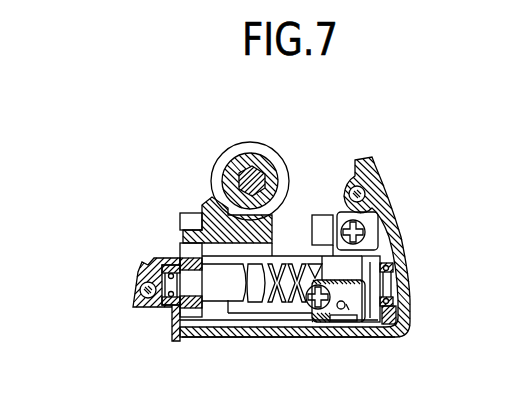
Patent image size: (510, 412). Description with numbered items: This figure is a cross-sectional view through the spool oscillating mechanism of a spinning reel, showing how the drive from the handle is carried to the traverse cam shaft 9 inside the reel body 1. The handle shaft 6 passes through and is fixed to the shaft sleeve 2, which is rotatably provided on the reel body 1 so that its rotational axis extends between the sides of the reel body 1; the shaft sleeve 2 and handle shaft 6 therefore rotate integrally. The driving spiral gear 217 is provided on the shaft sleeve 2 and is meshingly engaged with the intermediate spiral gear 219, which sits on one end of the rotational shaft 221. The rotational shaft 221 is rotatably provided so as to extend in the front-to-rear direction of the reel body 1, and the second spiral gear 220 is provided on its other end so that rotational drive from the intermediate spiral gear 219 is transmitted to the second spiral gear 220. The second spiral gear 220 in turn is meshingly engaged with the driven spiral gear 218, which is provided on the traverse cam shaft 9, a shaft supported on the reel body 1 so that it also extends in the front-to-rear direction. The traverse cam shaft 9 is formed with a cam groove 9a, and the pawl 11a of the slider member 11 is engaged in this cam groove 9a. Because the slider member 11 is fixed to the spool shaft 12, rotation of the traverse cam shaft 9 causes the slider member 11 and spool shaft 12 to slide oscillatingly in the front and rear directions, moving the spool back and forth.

The reel body 1 is at (387, 193).
The shaft sleeve 2 is at (247, 163).
The handle shaft 6 is at (270, 164).
The traverse cam shaft 9 is at (212, 292).
The cam groove 9a is at (297, 293).
The slider member 11 is at (379, 237).
The pawl 11a is at (360, 339).
The spool shaft 12 is at (323, 222).
The driving spiral gear 217 is at (265, 152).
The driven spiral gear 218 is at (193, 317).
The intermediate spiral gear 219 is at (284, 236).
The second spiral gear 220 is at (193, 213).
The rotational shaft 221 is at (180, 233).